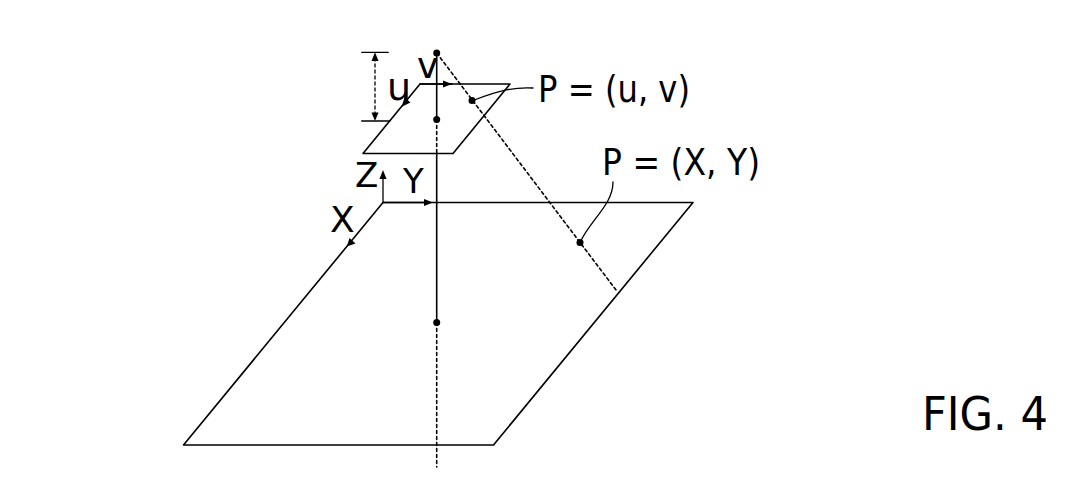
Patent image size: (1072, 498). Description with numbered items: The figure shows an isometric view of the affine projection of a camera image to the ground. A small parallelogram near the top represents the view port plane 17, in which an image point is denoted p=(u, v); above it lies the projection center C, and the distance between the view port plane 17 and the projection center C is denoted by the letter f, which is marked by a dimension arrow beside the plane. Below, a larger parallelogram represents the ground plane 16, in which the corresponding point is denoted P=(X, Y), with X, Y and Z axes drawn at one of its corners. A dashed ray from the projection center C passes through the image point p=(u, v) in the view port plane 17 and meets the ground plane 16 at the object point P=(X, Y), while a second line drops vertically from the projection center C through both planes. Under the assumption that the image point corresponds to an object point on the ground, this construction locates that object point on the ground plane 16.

The ground plane 16 is at (545, 357).
The view port plane 17 is at (483, 92).
The projection center C is at (435, 32).
The distance between the view port plane and the projection center f is at (373, 86).